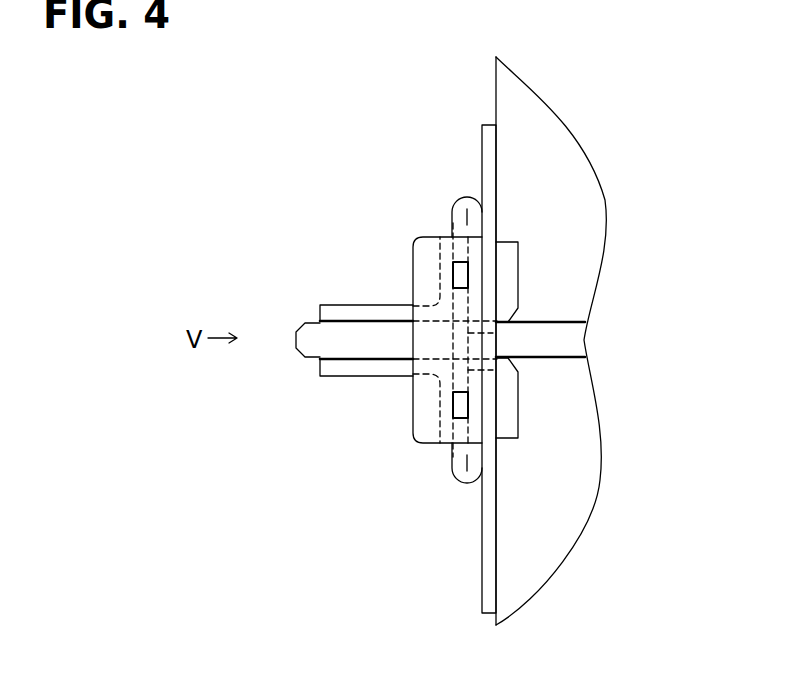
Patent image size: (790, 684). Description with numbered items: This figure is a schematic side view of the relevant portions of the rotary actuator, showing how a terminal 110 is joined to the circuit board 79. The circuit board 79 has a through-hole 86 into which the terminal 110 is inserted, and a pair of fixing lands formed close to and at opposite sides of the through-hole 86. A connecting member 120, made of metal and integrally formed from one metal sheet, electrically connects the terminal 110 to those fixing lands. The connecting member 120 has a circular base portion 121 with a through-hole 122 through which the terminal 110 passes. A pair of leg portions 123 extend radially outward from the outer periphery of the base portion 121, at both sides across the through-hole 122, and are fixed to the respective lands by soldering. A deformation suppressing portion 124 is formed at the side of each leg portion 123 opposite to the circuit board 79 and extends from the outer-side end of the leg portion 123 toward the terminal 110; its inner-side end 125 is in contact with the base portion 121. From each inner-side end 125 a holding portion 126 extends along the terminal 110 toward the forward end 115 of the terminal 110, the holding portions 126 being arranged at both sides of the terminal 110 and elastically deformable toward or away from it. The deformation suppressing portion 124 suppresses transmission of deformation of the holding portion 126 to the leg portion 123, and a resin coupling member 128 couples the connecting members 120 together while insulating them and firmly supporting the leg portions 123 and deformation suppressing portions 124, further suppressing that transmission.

The circuit board 79 is at (488, 583).
The through-hole 86 is at (497, 353).
The terminal 110 is at (360, 343).
The forward end 115 is at (300, 353).
The connecting member 120 is at (438, 336).
The base portion 121 is at (497, 378).
The through-hole 122 is at (497, 336).
The leg portion 123 is at (473, 222).
The deformation suppressing portion 124 is at (457, 222).
The inner-side end 125 is at (435, 288).
The holding portion 126 is at (333, 308).
The coupling member 128 is at (425, 252).